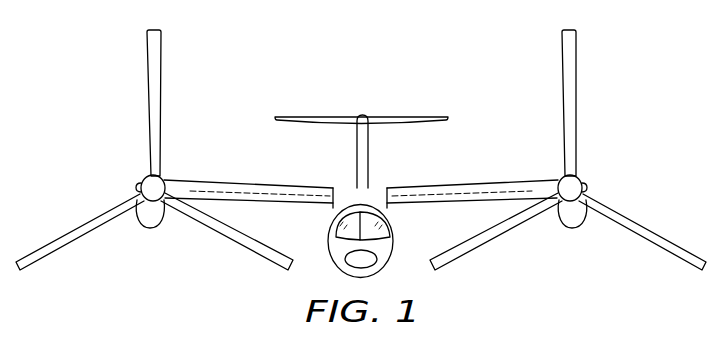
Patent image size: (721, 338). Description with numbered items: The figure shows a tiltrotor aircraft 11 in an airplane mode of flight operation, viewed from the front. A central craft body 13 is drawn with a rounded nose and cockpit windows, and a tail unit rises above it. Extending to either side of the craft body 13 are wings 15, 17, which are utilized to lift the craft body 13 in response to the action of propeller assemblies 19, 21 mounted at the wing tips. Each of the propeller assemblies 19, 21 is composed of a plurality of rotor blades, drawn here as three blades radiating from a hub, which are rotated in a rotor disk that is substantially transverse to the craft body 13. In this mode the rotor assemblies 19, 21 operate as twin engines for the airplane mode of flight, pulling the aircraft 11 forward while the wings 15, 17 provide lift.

The tiltrotor aircraft 11 is at (361, 154).
The craft body 13 is at (394, 237).
The wing 15 is at (251, 183).
The wing 17 is at (471, 185).
The propeller assembly 19 is at (136, 168).
The propeller assembly 21 is at (588, 167).